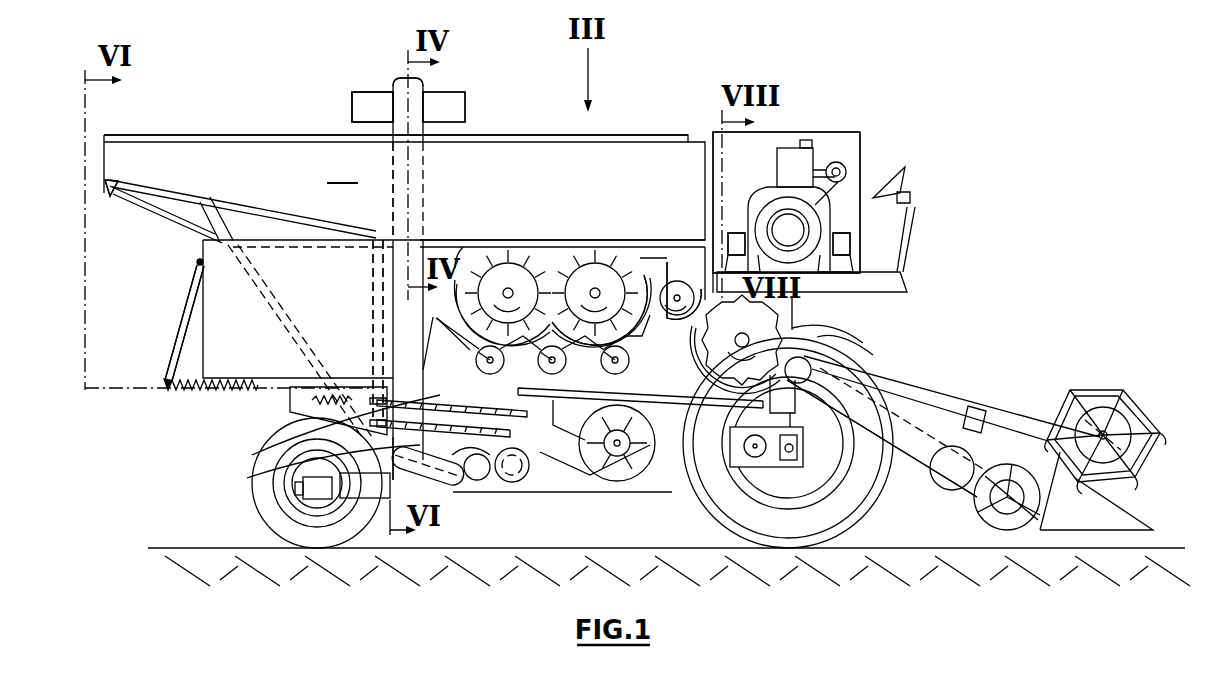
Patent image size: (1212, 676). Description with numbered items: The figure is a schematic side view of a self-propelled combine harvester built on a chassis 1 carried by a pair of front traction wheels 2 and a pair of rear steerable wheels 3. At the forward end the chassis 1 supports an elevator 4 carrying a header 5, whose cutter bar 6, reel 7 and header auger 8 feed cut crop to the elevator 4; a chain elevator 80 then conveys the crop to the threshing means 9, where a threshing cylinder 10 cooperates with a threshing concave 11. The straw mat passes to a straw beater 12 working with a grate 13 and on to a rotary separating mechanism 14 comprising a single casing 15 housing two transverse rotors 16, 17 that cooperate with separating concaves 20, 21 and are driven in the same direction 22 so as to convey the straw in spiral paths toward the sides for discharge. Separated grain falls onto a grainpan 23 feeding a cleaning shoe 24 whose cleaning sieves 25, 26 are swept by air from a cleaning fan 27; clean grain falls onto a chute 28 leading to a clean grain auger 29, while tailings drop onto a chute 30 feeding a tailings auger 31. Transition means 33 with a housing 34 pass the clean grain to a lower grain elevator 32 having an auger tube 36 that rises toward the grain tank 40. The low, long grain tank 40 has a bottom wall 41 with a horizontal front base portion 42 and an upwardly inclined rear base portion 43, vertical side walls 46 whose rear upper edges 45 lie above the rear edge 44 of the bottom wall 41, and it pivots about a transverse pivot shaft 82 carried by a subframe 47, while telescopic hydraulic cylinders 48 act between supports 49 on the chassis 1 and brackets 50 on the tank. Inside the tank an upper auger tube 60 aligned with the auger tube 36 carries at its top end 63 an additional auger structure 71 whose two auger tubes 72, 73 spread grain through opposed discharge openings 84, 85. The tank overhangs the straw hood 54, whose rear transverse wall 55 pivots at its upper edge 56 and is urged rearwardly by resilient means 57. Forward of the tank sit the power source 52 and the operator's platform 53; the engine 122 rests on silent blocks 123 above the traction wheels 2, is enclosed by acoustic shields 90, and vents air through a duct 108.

The chassis 1 is at (672, 495).
The front traction wheels 2 is at (873, 523).
The rear steerable wheels 3 is at (252, 528).
The elevator 4 is at (912, 388).
The header 5 is at (960, 517).
The cutter bar 6 is at (1050, 530).
The reel 7 is at (1100, 392).
The header auger 8 is at (1003, 470).
The threshing means 9 is at (833, 318).
The threshing cylinder 10 is at (850, 343).
The threshing concave 11 is at (712, 365).
The straw beater 12 is at (688, 267).
The grate 13 is at (680, 338).
The rotary separating mechanism 14 is at (532, 225).
The casing 15 is at (555, 243).
The rotor 16 is at (600, 262).
The rotor 17 is at (500, 262).
The separating concave 20 is at (552, 366).
The separating concave 21 is at (474, 355).
The direction of rotation 22 is at (478, 293).
The grainpan 23 is at (725, 403).
The cleaning shoe 24 is at (275, 416).
The cleaning sieve 25 is at (480, 400).
The cleaning sieve 26 is at (437, 470).
The cleaning fan 27 is at (627, 481).
The chute 28 is at (478, 481).
The clean grain auger 29 is at (533, 490).
The chute 30 is at (249, 478).
The tailings auger 31 is at (514, 480).
The lower grain elevator 32 is at (395, 88).
The transition means 33 is at (447, 480).
The housing 34 is at (393, 480).
The auger tube 36 is at (385, 328).
The grain tank 40 is at (638, 135).
The bottom wall 41 is at (452, 243).
The front base portion 42 is at (625, 243).
The rear base portion 43 is at (288, 214).
The rear edge 44 is at (105, 185).
The rear upper edges 45 is at (205, 135).
The side walls 46 is at (343, 170).
The subframe 47 is at (175, 232).
The telescopic hydraulic cylinders 48 is at (375, 308).
The supports 49 is at (253, 455).
The brackets 50 is at (375, 247).
The power source 52 is at (825, 132).
The operator's platform 53 is at (905, 290).
The straw hood 54 is at (195, 261).
The rear transverse wall 55 is at (183, 315).
The upper edge 56 is at (198, 266).
The resilient means 57 is at (180, 390).
The upper auger tube 60 is at (393, 200).
The top end 63 is at (394, 80).
The additional auger structure 71 is at (352, 84).
The auger tube 72 is at (462, 90).
The auger tube 73 is at (352, 118).
The chain elevator 80 is at (950, 440).
The transverse pivot shaft 82 is at (110, 190).
The discharge opening 84 is at (465, 115).
The discharge opening 85 is at (352, 100).
The acoustic shields 90 is at (862, 150).
The duct 108 is at (823, 190).
The engine 122 is at (777, 181).
The silent blocks 123 is at (728, 240).